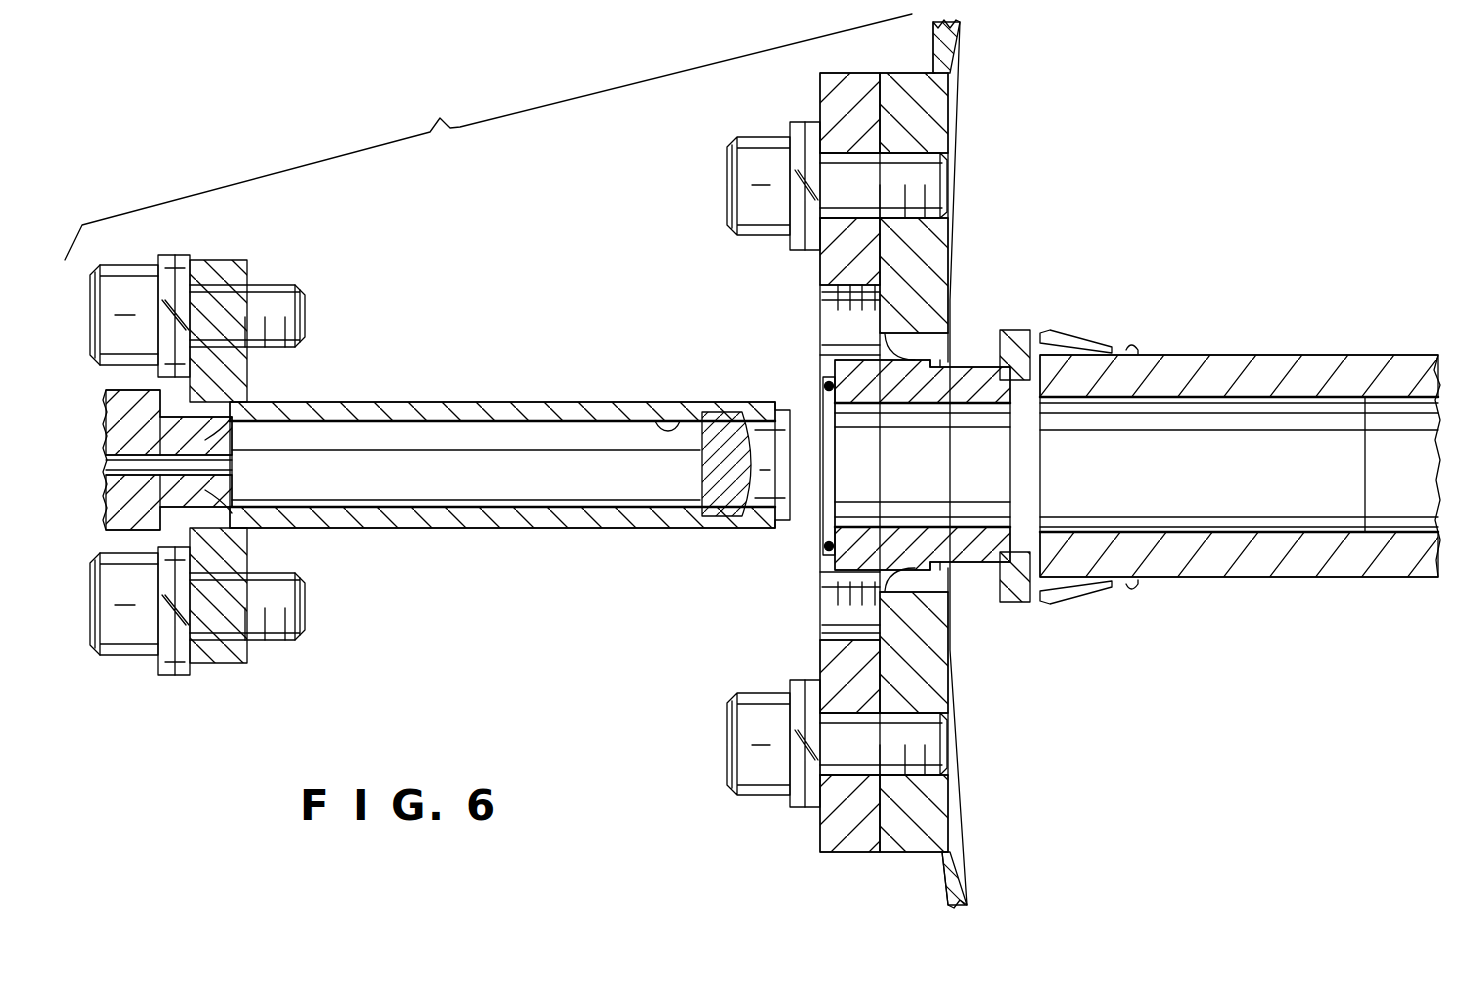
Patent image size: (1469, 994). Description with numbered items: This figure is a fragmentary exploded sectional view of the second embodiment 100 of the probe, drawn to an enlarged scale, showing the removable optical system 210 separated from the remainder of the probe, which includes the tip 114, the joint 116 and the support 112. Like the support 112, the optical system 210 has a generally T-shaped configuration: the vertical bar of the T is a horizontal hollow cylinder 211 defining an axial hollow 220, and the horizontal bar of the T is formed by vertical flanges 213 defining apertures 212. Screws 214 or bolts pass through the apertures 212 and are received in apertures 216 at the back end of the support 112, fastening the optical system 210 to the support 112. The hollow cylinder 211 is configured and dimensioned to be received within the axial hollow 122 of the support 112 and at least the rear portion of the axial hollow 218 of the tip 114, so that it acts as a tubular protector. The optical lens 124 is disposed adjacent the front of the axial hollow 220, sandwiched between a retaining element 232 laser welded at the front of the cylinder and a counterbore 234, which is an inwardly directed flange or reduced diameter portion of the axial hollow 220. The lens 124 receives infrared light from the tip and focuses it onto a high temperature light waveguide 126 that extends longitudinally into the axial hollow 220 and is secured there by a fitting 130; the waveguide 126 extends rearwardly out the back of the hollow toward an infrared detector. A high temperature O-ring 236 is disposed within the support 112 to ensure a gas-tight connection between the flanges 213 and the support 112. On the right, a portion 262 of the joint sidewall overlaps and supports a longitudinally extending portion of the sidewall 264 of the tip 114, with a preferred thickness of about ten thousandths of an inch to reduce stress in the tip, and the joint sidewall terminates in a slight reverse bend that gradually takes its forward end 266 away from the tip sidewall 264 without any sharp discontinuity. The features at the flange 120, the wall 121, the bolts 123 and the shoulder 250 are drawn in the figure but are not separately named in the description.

The second embodiment 100 is at (488, 137).
The support 112 is at (830, 565).
The tip 114 is at (1231, 578).
The joint 116 is at (1020, 610).
The mounting flange 120 is at (840, 150).
The wall plate 121 is at (947, 85).
The axial hollow of support 122 is at (880, 489).
The bolt 123 is at (728, 180).
The optical lens 124 is at (700, 518).
The high temperature light waveguide 126 is at (232, 416).
The fitting 130 is at (150, 495).
The removable optical system 210 is at (427, 362).
The cylinder 211 is at (437, 530).
The apertures 212 is at (215, 270).
The flanges 213 is at (232, 364).
The screws 214 is at (122, 268).
The apertures 216 is at (832, 322).
The axial hollow of tip 218 is at (1120, 499).
The axial hollow 220 is at (398, 483).
The retaining element 232 is at (747, 408).
The counterbore 234 is at (643, 407).
The high temperature O-ring 236 is at (827, 385).
The groove 250 is at (953, 360).
The overlapping and supporting sidewall portion 262 is at (1105, 345).
The tip sidewall 264 is at (1395, 355).
The forward end of joint sidewall 266 is at (1135, 345).